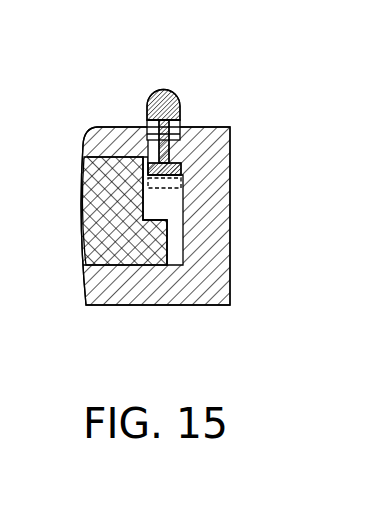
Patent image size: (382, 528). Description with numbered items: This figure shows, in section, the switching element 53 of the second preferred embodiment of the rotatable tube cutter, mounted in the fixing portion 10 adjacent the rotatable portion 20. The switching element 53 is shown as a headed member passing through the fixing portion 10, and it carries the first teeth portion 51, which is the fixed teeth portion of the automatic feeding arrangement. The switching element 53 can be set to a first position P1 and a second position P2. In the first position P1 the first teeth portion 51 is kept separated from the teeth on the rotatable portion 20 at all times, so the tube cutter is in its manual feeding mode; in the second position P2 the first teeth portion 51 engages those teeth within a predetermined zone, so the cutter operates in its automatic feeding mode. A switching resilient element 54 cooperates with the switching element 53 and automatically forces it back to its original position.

The fixing portion 10 is at (103, 113).
The rotatable portion 20 is at (105, 243).
The switching element 53 is at (170, 96).
The switching resilient element 54 is at (181, 129).
The first teeth portion 51 is at (178, 170).
The first position P1 is at (182, 107).
The second position P2 is at (167, 190).